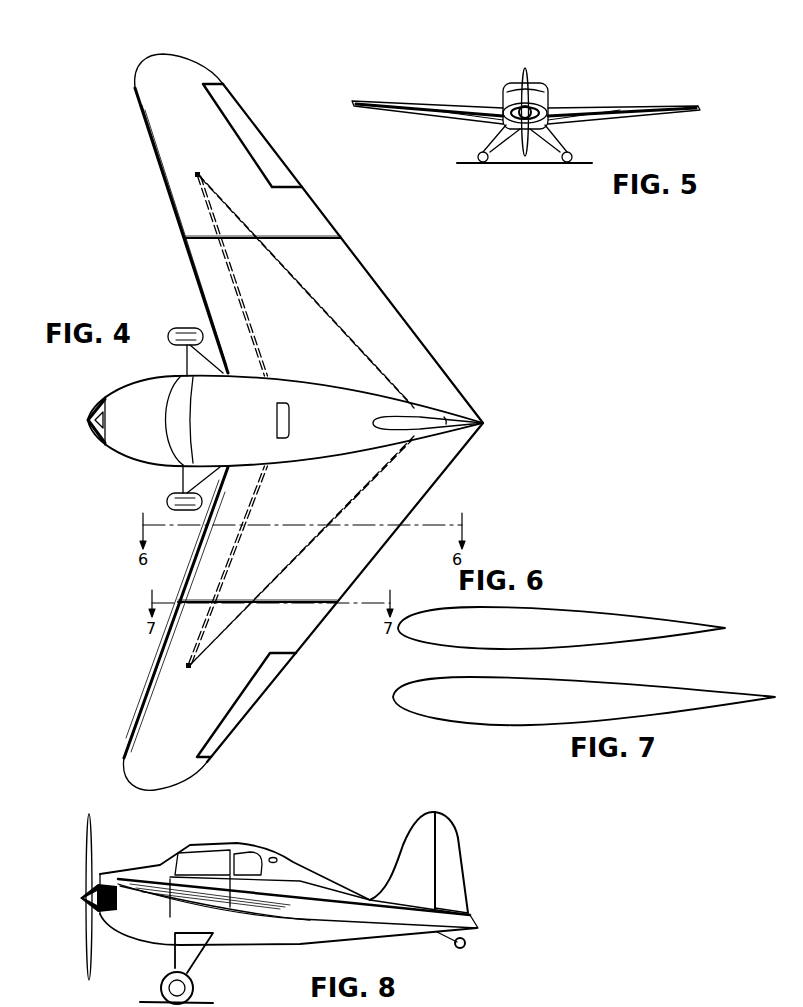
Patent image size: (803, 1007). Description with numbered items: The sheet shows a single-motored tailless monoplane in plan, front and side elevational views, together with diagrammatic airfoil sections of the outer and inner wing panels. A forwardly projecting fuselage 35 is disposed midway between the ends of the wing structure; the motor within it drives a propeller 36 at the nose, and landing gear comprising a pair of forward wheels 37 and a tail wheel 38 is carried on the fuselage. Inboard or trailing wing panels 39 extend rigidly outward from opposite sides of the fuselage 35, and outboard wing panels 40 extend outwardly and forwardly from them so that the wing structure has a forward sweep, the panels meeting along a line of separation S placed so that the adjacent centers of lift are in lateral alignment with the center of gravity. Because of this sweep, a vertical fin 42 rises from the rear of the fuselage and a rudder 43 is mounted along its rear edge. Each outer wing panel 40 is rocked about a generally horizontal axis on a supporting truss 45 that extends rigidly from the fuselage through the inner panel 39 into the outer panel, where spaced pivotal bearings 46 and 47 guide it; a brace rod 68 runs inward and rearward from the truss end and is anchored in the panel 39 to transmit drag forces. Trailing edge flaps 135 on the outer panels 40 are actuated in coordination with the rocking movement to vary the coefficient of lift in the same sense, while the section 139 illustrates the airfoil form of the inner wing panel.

In FIG. 4, the fuselage 35 is at (146, 441).
In FIG. 5, the fuselage 35 is at (548, 102).
In FIG. 8, the fuselage 35 is at (157, 923).
In FIG. 5, the propeller 36 is at (530, 71).
In FIG. 8, the propeller 36 is at (86, 943).
In FIG. 5, the forward wheels 37 is at (476, 155).
In FIG. 8, the forward wheels 37 is at (160, 982).
In FIG. 8, the tail wheel 38 is at (468, 943).
In FIG. 4, the inboard wing panels 39 is at (410, 347).
In FIG. 5, the inboard wing panels 39 is at (482, 122).
In FIG. 4, the outboard wing panels 40 is at (180, 139).
In FIG. 5, the outboard wing panels 40 is at (408, 118).
In FIG. 6, the outboard wing panels 40 is at (615, 635).
In FIG. 8, the vertical fin 42 is at (417, 847).
In FIG. 8, the rudder 43 is at (453, 865).
In FIG. 4, the supporting trusses 45 is at (242, 305).
In FIG. 4, the pivotal bearing 46 is at (215, 240).
In FIG. 4, the pivotal bearing 47 is at (194, 175).
In FIG. 4, the brace rod 68 is at (328, 312).
In FIG. 4, the trailing edge flaps 135 is at (242, 119).
In FIG. 7, the inner wing airfoil section 139 is at (448, 712).
In FIG. 4, the line of separation S is at (340, 239).
In FIG. 5, the line of separation S is at (440, 119).
In FIG. 8, the line of separation S is at (312, 920).